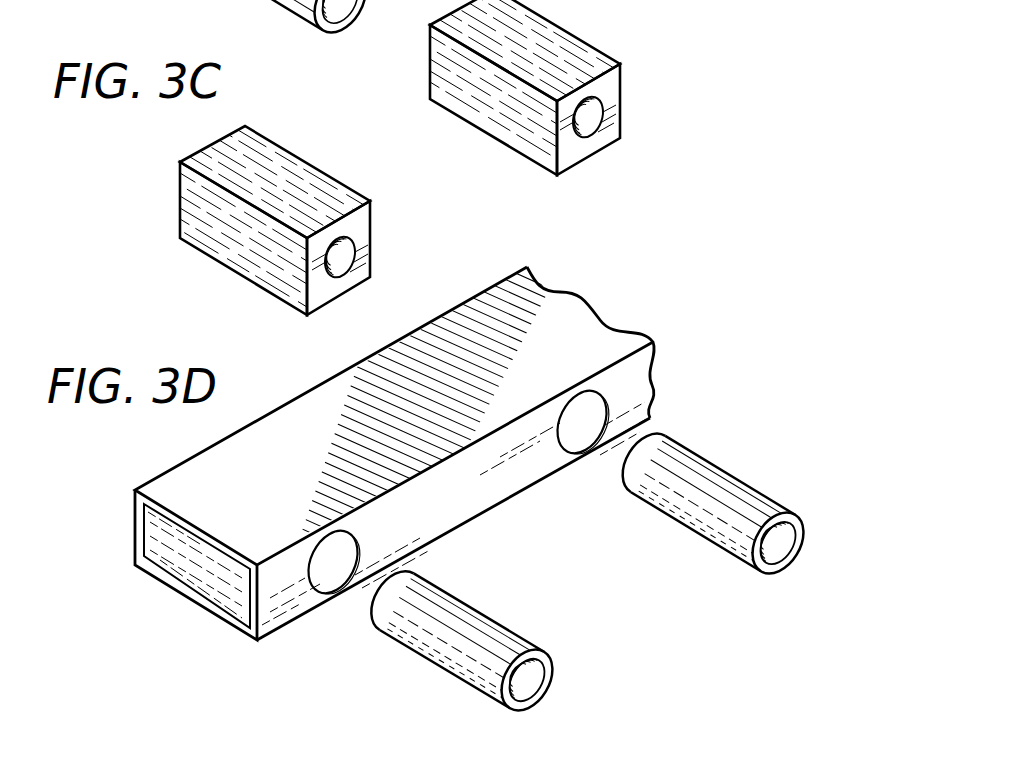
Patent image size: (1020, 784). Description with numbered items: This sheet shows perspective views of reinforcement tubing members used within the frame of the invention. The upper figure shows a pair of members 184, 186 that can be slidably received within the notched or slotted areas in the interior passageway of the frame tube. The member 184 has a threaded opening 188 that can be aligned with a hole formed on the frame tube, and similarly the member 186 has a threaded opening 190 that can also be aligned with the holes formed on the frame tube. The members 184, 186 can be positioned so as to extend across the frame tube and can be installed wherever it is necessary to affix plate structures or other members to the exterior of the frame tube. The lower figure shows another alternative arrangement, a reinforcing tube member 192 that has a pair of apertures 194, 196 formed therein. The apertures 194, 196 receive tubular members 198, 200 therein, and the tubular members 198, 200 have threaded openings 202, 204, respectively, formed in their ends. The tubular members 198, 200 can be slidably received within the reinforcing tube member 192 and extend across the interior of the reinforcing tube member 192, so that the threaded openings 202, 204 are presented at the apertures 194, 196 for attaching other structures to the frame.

In FIG. 3C, the member 184 is at (580, 45).
In FIG. 3C, the member 186 is at (350, 200).
In FIG. 3C, the threaded opening 188 is at (600, 120).
In FIG. 3C, the threaded opening 190 is at (367, 248).
In FIG. 3D, the reinforcing tube member 192 is at (600, 330).
In FIG. 3D, the aperture 194 is at (595, 412).
In FIG. 3D, the aperture 196 is at (337, 558).
In FIG. 3D, the tubular member 198 is at (713, 468).
In FIG. 3D, the tubular member 200 is at (490, 627).
In FIG. 3D, the threaded opening 202 is at (793, 552).
In FIG. 3D, the threaded opening 204 is at (545, 678).